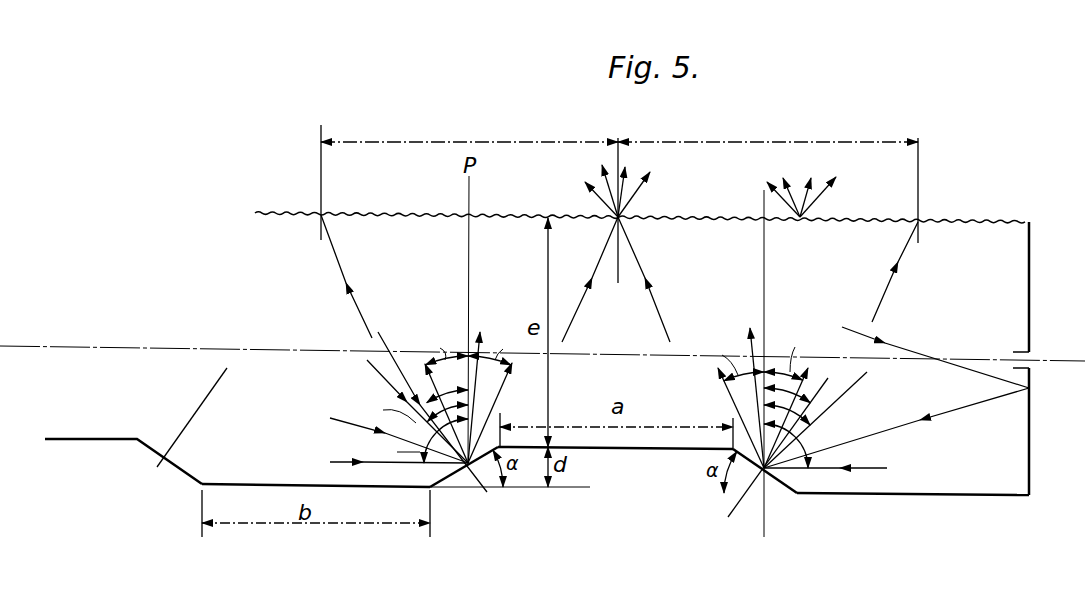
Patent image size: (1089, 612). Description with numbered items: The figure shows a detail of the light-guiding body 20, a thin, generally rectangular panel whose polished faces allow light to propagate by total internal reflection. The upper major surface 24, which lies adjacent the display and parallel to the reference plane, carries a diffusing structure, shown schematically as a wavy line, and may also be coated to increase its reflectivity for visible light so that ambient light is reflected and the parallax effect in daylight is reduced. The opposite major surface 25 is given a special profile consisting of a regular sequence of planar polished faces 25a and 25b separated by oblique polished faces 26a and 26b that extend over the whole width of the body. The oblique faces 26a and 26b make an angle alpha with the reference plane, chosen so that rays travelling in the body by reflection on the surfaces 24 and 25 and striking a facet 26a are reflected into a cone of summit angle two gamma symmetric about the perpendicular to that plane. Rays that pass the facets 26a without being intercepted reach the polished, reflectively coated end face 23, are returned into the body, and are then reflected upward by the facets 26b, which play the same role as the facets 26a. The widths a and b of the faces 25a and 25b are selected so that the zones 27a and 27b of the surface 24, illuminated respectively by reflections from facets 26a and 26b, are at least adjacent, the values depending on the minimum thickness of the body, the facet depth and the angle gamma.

The body 20 is at (177, 429).
The end face 23 is at (1033, 487).
The major surface 24 is at (262, 210).
The major surface 25 is at (872, 498).
The planar polished face 25a is at (615, 452).
The planar polished face 25b is at (248, 488).
The oblique polished face 26a is at (456, 476).
The oblique polished face 26b is at (781, 486).
The zone 27a is at (469, 197).
The zone 27b is at (768, 177).